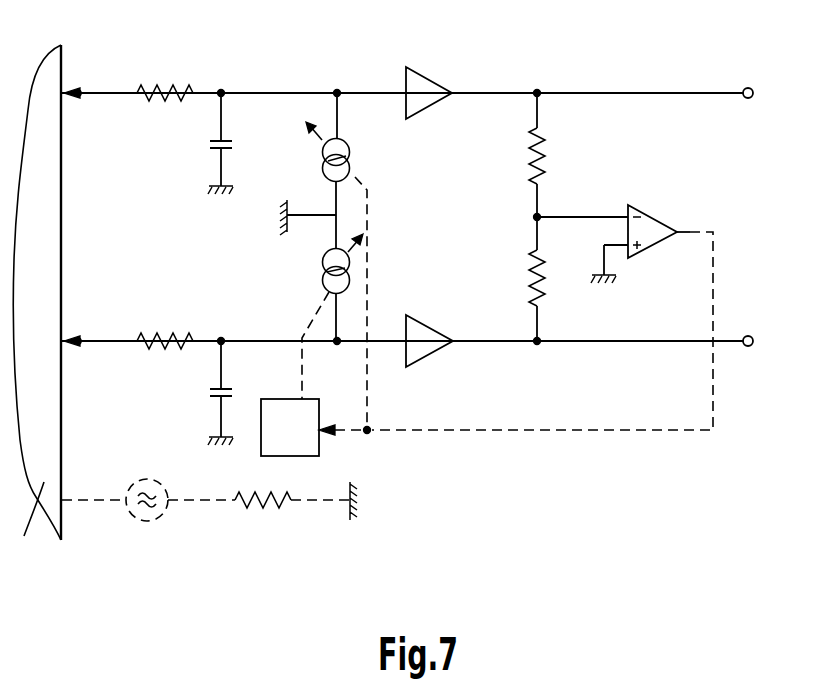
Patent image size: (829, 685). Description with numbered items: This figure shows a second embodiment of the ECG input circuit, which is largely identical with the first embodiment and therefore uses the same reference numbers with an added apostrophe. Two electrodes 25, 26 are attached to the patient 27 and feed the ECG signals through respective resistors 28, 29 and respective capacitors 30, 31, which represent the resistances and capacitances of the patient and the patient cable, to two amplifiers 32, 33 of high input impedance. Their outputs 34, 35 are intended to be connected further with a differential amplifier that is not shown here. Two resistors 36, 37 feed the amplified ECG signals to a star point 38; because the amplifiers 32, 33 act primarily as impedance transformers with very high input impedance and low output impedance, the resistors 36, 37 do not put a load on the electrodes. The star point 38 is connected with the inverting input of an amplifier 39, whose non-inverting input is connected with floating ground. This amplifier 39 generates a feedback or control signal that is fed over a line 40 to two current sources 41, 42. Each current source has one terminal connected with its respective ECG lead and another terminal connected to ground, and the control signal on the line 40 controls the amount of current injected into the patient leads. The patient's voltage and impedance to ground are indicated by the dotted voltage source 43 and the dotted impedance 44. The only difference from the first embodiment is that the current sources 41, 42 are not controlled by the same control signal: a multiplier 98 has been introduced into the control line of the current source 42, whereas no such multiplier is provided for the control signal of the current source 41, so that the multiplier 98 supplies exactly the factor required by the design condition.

The electrode 25 is at (79, 91).
The electrode 26 is at (79, 339).
The patient 27 is at (31, 311).
The resistor 28 is at (170, 88).
The resistor 29 is at (150, 337).
The capacitor 30 is at (212, 146).
The capacitor 31 is at (212, 400).
The amplifier 32 is at (428, 88).
The amplifier 33 is at (430, 336).
The output 34 is at (752, 98).
The output 35 is at (752, 346).
The resistor 36 is at (548, 152).
The resistor 37 is at (548, 280).
The star point 38 is at (535, 217).
The amplifier 39 is at (655, 226).
The line 40 is at (525, 432).
The current source 41 is at (352, 154).
The current source 42 is at (322, 262).
The voltage source 43 is at (147, 522).
The impedance 44 is at (245, 506).
The multiplier 98 is at (320, 452).